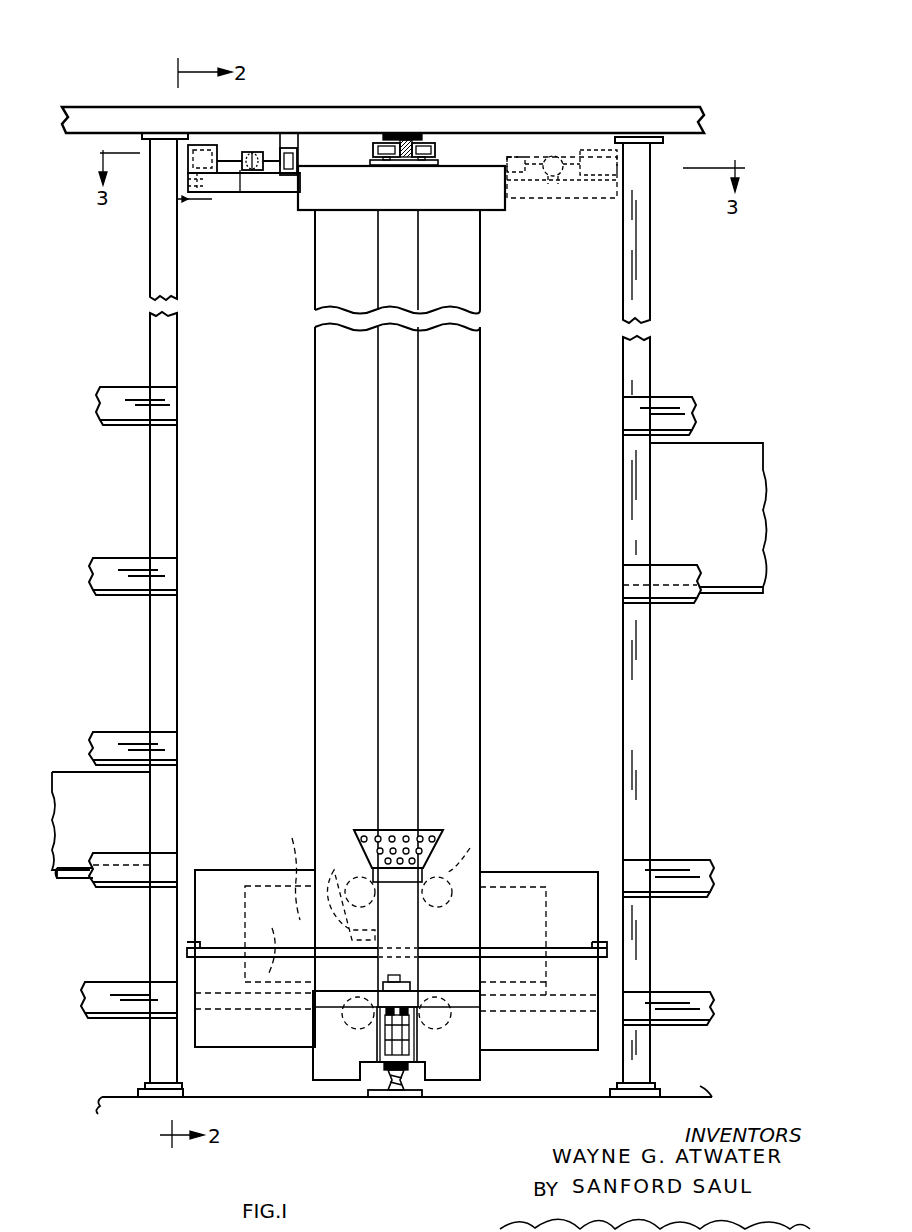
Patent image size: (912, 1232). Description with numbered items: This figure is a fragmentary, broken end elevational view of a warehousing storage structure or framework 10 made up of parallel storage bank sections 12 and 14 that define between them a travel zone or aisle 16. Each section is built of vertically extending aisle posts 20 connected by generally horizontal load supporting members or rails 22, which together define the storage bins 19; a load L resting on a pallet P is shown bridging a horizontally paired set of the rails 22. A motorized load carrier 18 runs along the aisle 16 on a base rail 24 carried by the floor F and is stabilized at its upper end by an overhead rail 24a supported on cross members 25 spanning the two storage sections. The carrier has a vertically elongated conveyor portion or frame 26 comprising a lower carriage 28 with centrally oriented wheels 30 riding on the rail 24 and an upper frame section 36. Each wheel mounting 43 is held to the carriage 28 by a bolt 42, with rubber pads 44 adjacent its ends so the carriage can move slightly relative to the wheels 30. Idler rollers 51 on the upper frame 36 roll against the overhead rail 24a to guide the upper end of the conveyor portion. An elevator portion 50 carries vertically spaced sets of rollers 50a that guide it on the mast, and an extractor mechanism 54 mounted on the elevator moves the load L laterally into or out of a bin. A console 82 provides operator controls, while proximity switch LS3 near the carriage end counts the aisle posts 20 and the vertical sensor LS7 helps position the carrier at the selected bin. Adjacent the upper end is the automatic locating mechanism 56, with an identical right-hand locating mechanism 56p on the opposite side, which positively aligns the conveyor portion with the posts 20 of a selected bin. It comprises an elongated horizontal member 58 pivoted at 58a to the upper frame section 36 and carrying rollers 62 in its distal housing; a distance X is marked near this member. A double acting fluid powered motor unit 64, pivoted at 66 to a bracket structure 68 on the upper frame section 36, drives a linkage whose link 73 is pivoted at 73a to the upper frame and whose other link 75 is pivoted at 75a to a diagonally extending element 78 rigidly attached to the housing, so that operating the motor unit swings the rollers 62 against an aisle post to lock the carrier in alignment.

The storage structure or framework 10 is at (708, 124).
The storage bank section 12 is at (128, 380).
The storage bank section 14 is at (684, 384).
The travel zone or aisle 16 is at (553, 156).
The motorized load carrier 18 is at (508, 432).
The storage bins 19 is at (126, 490).
The aisle posts 20 is at (166, 812).
The load supporting members or rails 22 is at (92, 408).
The base rail 24 is at (410, 1074).
The overhead rail 24a is at (405, 133).
The cross members 25 is at (514, 120).
The conveyor portion or frame 26 is at (470, 786).
The lower carriage 28 is at (470, 1074).
The wheels 30 is at (380, 1068).
The upper frame section 36 is at (458, 176).
The bolt 42 is at (404, 976).
The wheel mounting 43 is at (418, 1052).
The rubber pads 44 is at (404, 990).
The elevator portion 50 is at (214, 870).
The rollers 50a is at (450, 878).
The idler rollers 51 is at (376, 143).
The extractor mechanism 54 is at (238, 1012).
The automatic locating mechanism 56 is at (236, 178).
The right-hand locating mechanism 56p is at (545, 194).
The elongated horizontally oriented member 58 is at (244, 216).
The pivotal connection 58a is at (188, 183).
The rollers 62 is at (188, 160).
The fluid powered motor unit 64 is at (258, 152).
The pivot 66 is at (290, 140).
The bracket structure 68 is at (258, 190).
The link 73 is at (298, 140).
The pivot 73a is at (290, 176).
The link 75 is at (246, 150).
The pivot 75a is at (236, 145).
The diagonally extending element 78 is at (226, 155).
The console 82 is at (450, 838).
The load L is at (72, 786).
The pallet P is at (58, 884).
The proximity switch LS3 is at (187, 948).
The vertical sensor LS7 is at (393, 938).
The floor F is at (680, 1090).
The distance X is at (195, 199).